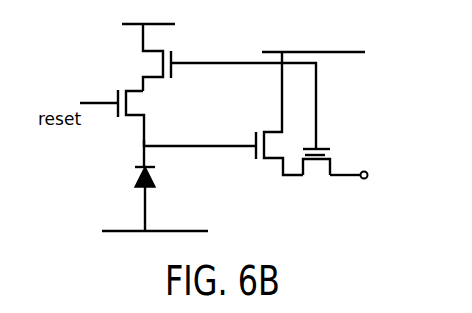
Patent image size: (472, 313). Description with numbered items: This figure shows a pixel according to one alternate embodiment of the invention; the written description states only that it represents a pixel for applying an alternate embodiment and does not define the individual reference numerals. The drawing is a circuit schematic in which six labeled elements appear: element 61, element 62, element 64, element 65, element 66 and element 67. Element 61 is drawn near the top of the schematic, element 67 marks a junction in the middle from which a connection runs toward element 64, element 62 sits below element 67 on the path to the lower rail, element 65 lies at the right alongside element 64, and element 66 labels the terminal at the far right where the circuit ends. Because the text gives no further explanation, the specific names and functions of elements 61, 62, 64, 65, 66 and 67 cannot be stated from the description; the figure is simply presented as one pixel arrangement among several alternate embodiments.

The load transistor 61 is at (229, 86).
The photodiode 62 is at (121, 199).
The amplifying transistor 64 is at (257, 113).
The capacitor 65 is at (331, 142).
The output terminal 66 is at (359, 190).
The node 67 is at (180, 150).